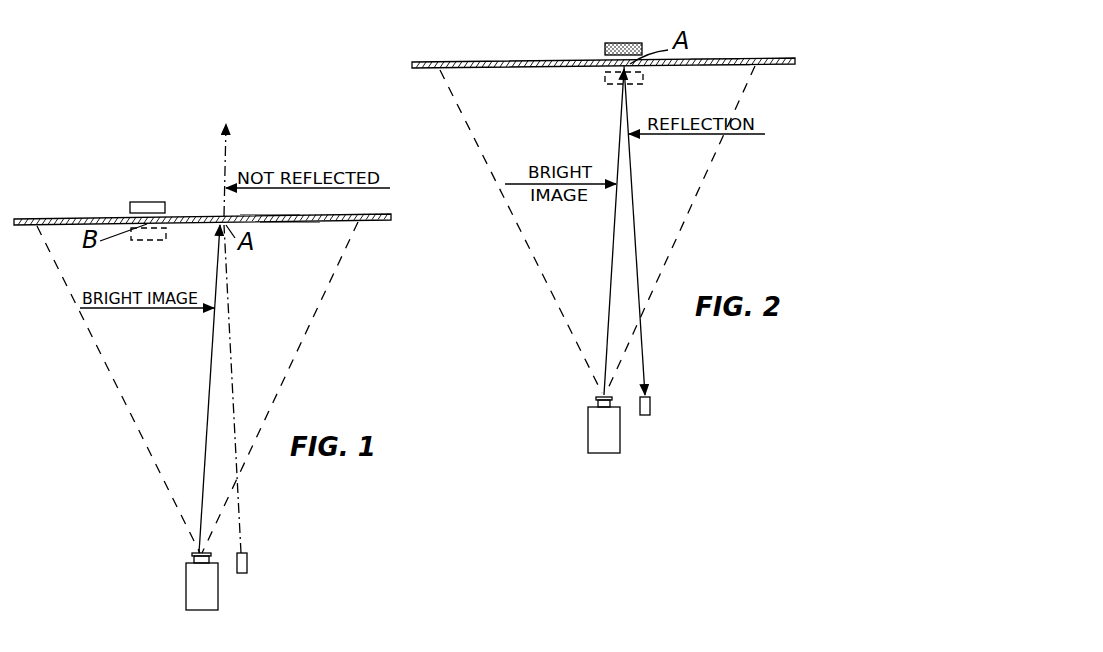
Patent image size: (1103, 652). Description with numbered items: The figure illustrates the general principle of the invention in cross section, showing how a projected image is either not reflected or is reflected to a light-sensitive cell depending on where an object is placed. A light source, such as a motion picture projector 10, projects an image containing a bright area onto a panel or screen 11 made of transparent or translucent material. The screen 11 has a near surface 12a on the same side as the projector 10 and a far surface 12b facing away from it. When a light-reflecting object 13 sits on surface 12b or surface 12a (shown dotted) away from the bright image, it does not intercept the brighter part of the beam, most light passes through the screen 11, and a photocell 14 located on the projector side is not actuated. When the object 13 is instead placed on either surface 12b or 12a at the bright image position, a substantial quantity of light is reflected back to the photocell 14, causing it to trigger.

In FIG. 1, the motion picture projector 10 is at (192, 594).
In FIG. 2, the motion picture projector 10 is at (592, 437).
In FIG. 1, the screen 11 is at (381, 225).
In FIG. 2, the screen 11 is at (457, 60).
In FIG. 1, the near-side surface 12a is at (292, 224).
In FIG. 2, the near-side surface 12a is at (721, 65).
In FIG. 1, the far-side surface 12b is at (268, 217).
In FIG. 2, the far-side surface 12b is at (712, 58).
In FIG. 1, the object 13 is at (165, 207).
In FIG. 2, the object 13 is at (641, 45).
In FIG. 1, the photocell 14 is at (246, 569).
In FIG. 2, the photocell 14 is at (648, 412).